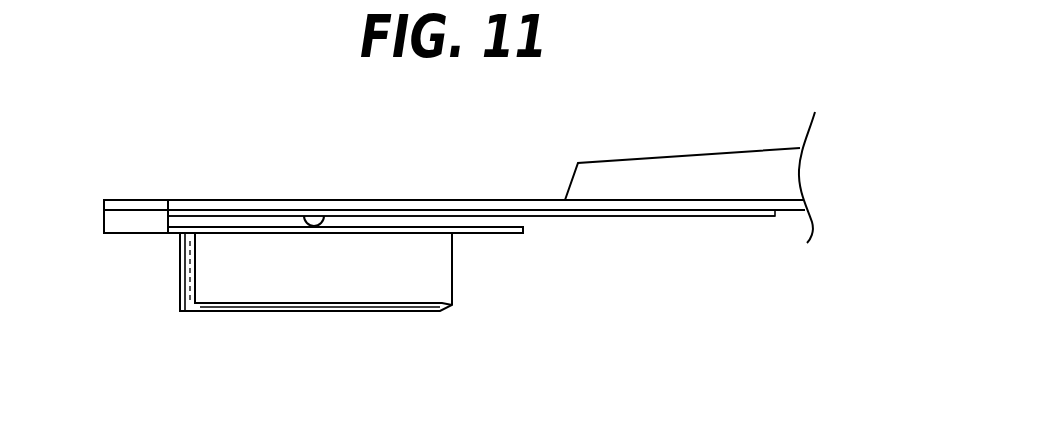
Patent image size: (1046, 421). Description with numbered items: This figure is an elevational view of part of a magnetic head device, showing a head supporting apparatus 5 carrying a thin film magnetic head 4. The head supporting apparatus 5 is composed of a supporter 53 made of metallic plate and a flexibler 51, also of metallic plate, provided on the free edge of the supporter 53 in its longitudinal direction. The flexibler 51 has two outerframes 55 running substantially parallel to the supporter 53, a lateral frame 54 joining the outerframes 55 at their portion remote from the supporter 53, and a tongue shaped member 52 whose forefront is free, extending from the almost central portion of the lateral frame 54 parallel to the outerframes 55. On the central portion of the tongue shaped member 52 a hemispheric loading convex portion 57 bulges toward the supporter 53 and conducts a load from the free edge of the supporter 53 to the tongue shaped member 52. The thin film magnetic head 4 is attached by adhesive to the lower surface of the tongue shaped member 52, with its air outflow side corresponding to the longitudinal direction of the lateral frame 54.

The thin film magnetic head 4 is at (307, 320).
The head supporting apparatus 5 is at (508, 200).
The flexibler 51 is at (133, 242).
The tongue shaped member 52 is at (477, 230).
The supporter 53 is at (405, 207).
The lateral frame 54 is at (135, 218).
The outerframe 55 is at (213, 214).
The loading convex portion 57 is at (313, 218).